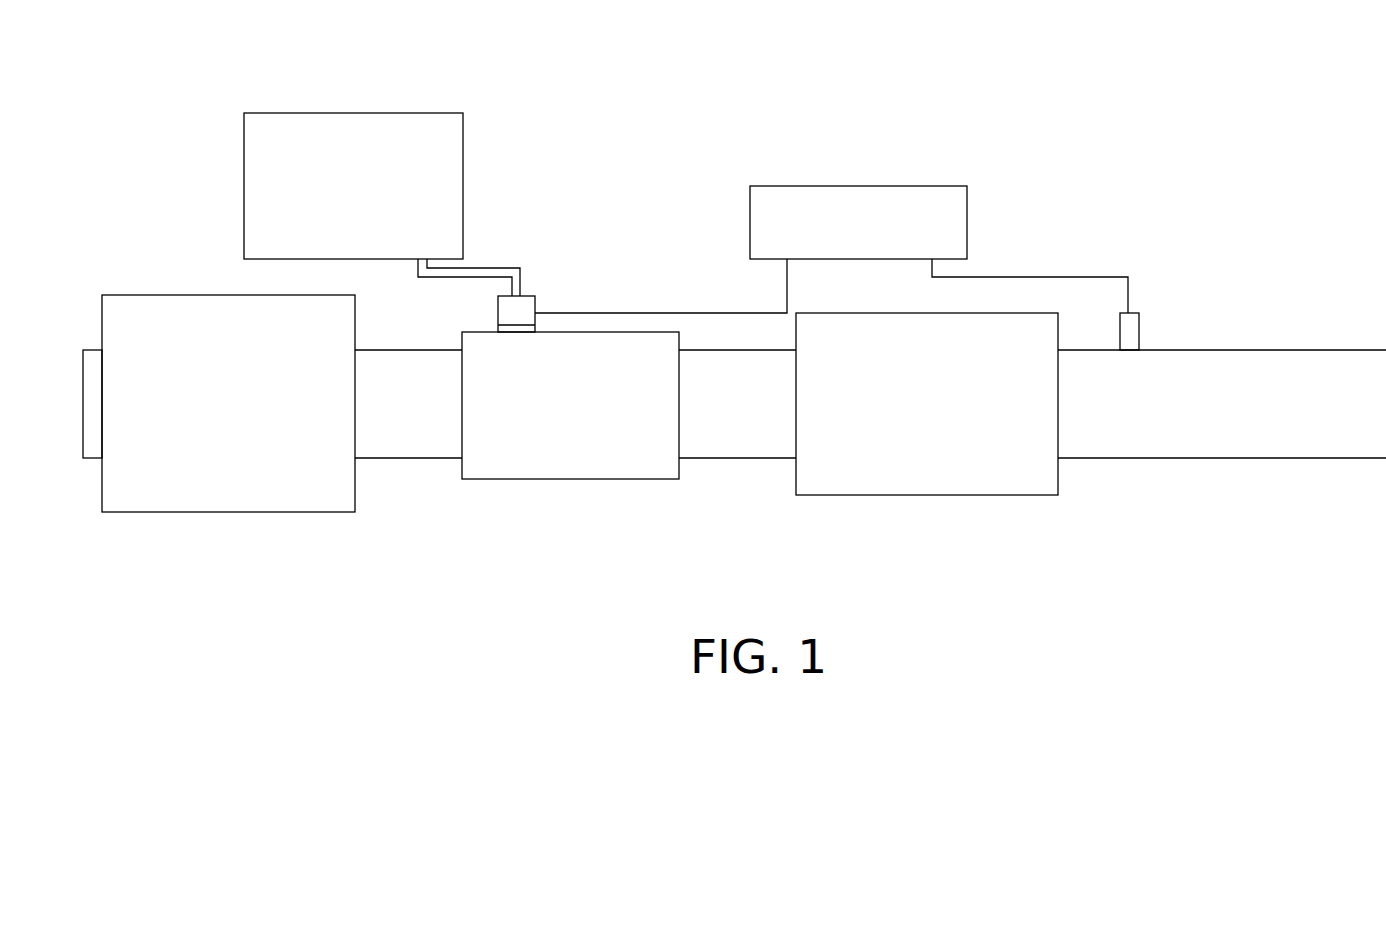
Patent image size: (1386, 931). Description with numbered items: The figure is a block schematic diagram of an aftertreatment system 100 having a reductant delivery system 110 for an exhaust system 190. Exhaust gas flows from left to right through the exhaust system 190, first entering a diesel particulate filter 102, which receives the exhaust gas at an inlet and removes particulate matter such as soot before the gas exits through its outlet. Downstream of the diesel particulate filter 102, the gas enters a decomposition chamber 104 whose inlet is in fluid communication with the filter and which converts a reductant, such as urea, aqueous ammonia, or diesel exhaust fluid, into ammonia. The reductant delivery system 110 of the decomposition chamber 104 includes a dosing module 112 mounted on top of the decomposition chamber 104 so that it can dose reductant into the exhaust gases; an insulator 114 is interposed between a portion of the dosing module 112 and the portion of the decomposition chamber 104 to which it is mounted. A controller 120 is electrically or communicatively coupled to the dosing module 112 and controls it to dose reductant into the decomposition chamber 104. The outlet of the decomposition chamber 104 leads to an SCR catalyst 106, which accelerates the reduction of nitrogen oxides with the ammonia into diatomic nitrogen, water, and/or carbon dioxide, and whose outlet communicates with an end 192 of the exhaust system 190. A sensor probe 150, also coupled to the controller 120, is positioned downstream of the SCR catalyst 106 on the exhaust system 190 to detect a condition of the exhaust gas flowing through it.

The aftertreatment system 100 is at (1007, 258).
The diesel particulate filter 102 is at (257, 512).
The decomposition chamber 104 is at (668, 332).
The SCR catalyst 106 is at (940, 495).
The reductant delivery system 110 is at (630, 239).
The dosing module 112 is at (536, 305).
The insulator 114 is at (418, 113).
The controller 120 is at (845, 186).
The sensor probe 150 is at (1157, 330).
The exhaust system 190 is at (455, 548).
The end of the exhaust system 192 is at (1320, 463).